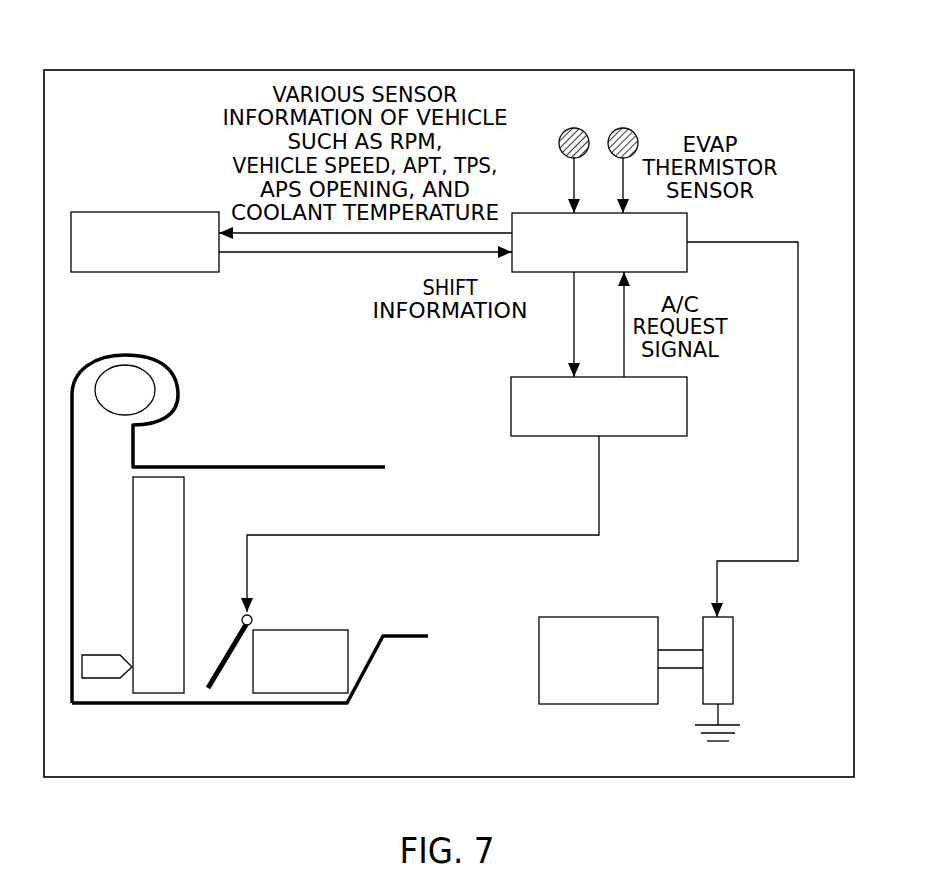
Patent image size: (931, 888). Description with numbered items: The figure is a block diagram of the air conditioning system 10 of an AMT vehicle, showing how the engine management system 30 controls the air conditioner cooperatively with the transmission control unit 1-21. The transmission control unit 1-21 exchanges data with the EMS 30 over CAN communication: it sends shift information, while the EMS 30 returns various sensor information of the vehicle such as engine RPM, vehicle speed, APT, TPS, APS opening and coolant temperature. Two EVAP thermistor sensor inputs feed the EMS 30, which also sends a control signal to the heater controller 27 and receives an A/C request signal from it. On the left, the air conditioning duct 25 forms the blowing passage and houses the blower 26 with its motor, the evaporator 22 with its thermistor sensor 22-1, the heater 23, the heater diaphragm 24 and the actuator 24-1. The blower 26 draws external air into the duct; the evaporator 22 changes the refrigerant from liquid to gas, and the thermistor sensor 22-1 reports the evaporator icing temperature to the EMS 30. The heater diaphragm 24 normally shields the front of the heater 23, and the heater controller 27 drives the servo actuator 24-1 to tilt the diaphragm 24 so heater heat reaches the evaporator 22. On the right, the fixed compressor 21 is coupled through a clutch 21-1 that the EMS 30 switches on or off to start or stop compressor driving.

The air conditioning system 10 is at (383, 70).
The transmission control unit 1-21 is at (146, 212).
The engine management system 30 is at (687, 222).
The heater controller 27 is at (687, 405).
The blower 26 is at (155, 382).
The air conditioning duct 25 is at (343, 467).
The evaporator 22 is at (160, 693).
The thermistor sensor 22-1 is at (98, 680).
The heater 23 is at (303, 693).
The heater diaphragm 24 is at (228, 670).
The actuator 24-1 is at (253, 619).
The compressor 21 is at (618, 617).
The clutch 21-1 is at (733, 627).